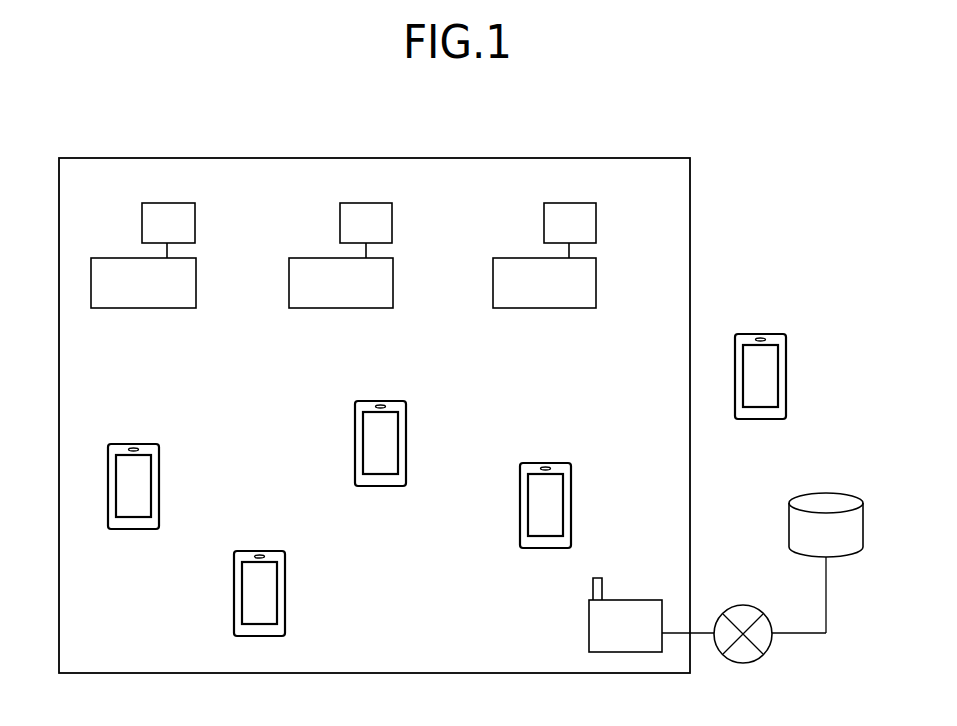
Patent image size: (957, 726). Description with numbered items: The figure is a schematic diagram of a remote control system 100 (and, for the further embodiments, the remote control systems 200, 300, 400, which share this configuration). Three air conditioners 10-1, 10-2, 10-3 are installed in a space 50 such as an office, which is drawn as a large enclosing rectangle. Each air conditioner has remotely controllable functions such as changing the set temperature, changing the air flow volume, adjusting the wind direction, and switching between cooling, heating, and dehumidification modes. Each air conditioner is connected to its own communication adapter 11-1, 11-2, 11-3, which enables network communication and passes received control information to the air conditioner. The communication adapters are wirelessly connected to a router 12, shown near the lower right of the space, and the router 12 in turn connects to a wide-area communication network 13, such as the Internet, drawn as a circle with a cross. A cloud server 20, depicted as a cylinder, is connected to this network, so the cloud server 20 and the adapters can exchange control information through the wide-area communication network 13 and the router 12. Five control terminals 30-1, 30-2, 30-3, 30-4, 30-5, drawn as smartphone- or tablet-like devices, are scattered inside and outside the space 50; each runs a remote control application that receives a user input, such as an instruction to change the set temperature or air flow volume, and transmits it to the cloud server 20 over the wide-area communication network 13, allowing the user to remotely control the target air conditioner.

The remote control system 100 is at (633, 111).
The remote control system 200 is at (463, 377).
The remote control system 300 is at (463, 377).
The remote control system 400 is at (463, 377).
The space 50 is at (519, 158).
The air conditioner 10-1 is at (196, 285).
The air conditioner 10-2 is at (393, 285).
The air conditioner 10-3 is at (596, 285).
The communication adapter 11-1 is at (195, 221).
The communication adapter 11-2 is at (392, 221).
The communication adapter 11-3 is at (596, 221).
The control terminal 30-1 is at (159, 470).
The control terminal 30-2 is at (285, 578).
The control terminal 30-3 is at (406, 425).
The control terminal 30-4 is at (571, 490).
The control terminal 30-5 is at (786, 360).
The router 12 is at (636, 600).
The wide-area communication network 13 is at (754, 607).
The cloud server 20 is at (824, 493).